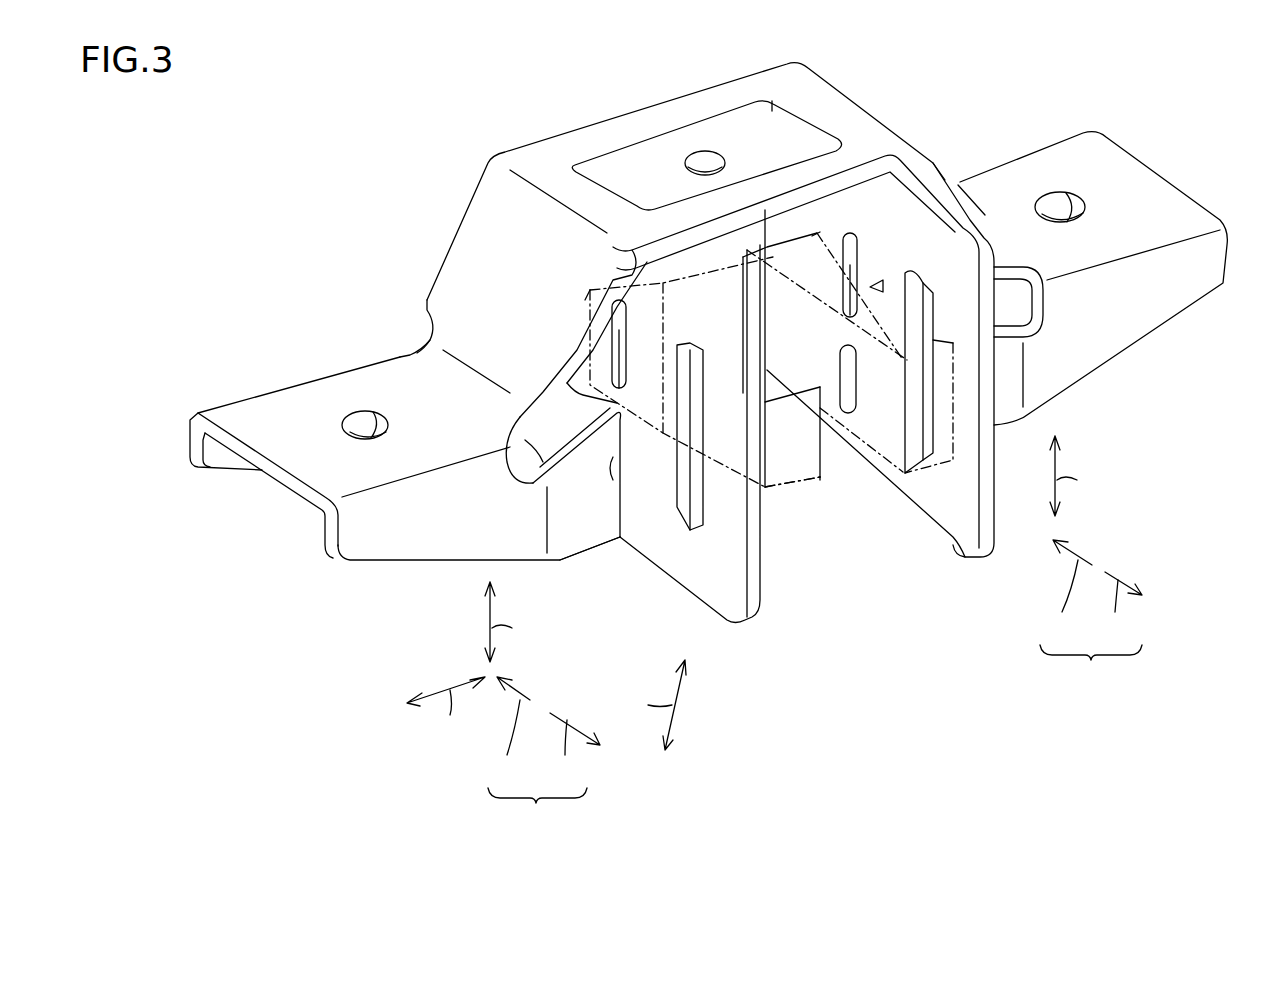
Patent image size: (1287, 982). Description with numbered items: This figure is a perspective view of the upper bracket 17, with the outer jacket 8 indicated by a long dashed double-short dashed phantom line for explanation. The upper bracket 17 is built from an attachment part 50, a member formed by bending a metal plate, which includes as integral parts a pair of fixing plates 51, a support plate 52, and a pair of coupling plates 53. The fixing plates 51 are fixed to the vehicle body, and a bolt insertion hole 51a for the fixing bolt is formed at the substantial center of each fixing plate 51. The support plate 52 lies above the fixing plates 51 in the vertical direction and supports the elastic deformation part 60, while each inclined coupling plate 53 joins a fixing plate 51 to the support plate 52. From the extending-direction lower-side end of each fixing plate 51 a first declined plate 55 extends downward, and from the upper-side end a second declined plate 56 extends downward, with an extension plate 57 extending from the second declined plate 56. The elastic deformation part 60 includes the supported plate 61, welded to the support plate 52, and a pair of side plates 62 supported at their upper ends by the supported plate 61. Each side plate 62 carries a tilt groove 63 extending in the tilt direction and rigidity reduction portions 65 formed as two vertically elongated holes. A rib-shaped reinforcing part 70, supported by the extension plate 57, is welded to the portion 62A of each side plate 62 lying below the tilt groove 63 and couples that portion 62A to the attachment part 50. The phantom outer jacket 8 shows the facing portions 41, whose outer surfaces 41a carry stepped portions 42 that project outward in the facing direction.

The attachment part 50 is at (742, 60).
The upper bracket 17 is at (828, 58).
The support plate 52 is at (590, 136).
The supported plate 61 is at (730, 145).
The elastic deformation part 60 is at (655, 170).
The coupling plate 53 is at (473, 252).
The fixing plate 51 is at (282, 393).
The bolt insertion hole 51a is at (470, 428).
The first declined plate 55 is at (217, 462).
The second declined plate 56 is at (383, 548).
The extension plate 57 is at (577, 540).
The side plate 62 is at (725, 618).
The portion of the side plate 62A is at (600, 392).
The reinforcing part 70 is at (585, 405).
The tilt groove 63 is at (697, 510).
The rigidity reduction portion 65 is at (603, 330).
The facing portion 41 is at (780, 457).
The outer surface 41a is at (585, 300).
The stepped portion 42 is at (663, 348).
The outer jacket 8 is at (815, 477).